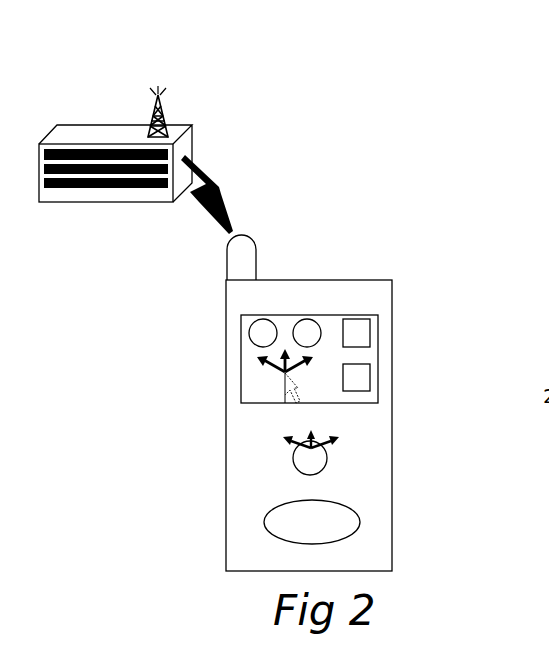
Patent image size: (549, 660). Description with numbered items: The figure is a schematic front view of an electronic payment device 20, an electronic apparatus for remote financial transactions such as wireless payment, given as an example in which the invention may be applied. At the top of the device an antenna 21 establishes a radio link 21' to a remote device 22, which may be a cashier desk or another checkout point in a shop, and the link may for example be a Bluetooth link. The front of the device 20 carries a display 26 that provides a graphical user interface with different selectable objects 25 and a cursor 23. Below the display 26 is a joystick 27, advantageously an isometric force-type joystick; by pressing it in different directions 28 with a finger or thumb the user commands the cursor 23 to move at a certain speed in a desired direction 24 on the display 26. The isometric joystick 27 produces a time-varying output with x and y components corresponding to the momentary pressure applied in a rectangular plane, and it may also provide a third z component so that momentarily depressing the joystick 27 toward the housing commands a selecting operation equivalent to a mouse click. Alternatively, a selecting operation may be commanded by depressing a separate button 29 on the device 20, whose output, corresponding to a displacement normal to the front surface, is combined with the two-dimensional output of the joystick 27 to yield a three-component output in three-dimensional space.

The electronic payment device 20 is at (380, 296).
The antenna 21 is at (265, 250).
The radio link 21' is at (229, 194).
The remote device 22 is at (70, 133).
The cursor 23 is at (292, 392).
The directions 24 is at (278, 371).
The selectable objects 25 is at (370, 342).
The display 26 is at (244, 395).
The joystick 27 is at (310, 468).
The directions 28 is at (323, 430).
The separate button 29 is at (345, 525).